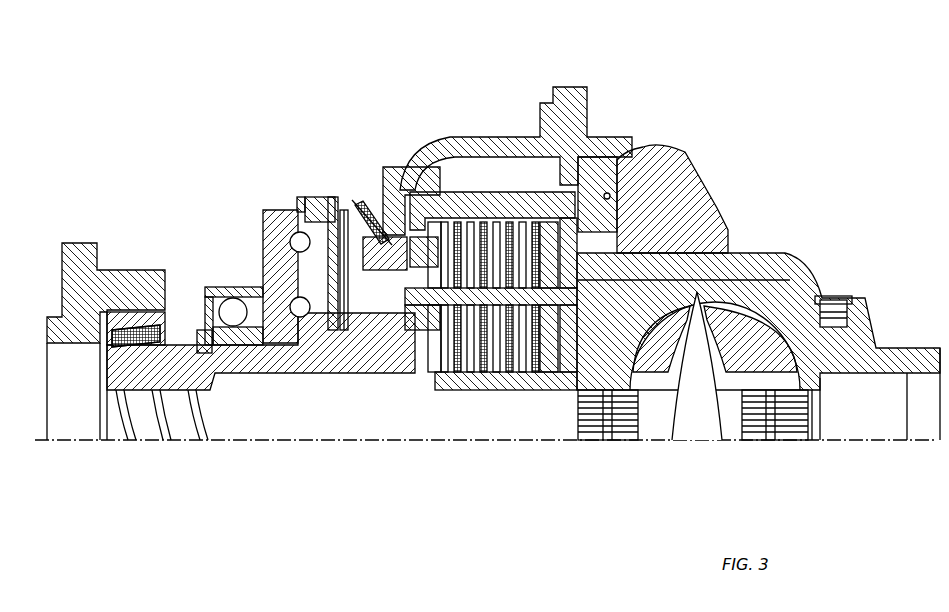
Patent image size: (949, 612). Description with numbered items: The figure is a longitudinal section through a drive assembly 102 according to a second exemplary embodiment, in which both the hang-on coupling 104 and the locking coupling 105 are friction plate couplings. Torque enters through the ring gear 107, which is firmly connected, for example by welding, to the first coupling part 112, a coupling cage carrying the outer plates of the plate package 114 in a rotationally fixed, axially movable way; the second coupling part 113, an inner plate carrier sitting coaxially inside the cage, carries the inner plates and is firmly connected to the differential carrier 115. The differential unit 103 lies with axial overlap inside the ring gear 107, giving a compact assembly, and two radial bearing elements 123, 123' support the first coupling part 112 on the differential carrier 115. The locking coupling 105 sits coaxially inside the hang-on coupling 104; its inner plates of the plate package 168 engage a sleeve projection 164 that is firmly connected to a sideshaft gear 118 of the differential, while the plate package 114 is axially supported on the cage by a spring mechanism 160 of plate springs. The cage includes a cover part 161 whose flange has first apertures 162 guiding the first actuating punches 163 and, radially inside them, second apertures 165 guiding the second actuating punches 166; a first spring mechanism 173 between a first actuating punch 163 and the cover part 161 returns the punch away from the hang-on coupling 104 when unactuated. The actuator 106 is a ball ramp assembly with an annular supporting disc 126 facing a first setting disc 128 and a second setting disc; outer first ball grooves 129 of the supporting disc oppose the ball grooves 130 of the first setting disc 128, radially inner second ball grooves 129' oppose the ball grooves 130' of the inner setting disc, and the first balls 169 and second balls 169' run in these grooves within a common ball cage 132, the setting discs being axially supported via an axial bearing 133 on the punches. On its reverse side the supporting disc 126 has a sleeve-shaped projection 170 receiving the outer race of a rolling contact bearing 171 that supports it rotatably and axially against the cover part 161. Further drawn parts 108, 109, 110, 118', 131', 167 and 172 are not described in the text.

The drive assembly 102 is at (197, 66).
The differential unit 103 is at (711, 243).
The hang-on coupling 104 is at (486, 183).
The locking coupling 105 is at (496, 404).
The actuator 106 is at (296, 126).
The ring gear 107 is at (678, 172).
The housing part 108 is at (622, 200).
The seal 109 is at (140, 350).
The housing cover 110 is at (115, 275).
The first coupling part 112 is at (511, 205).
The second coupling part 113 is at (530, 300).
The plate package 114 is at (452, 212).
The differential carrier 115 is at (752, 295).
The sideshaft gear 118 is at (775, 436).
The bolt 118' is at (608, 436).
The bearing element 123 is at (422, 362).
The bearing element 123' is at (851, 277).
The supporting disc 126 is at (258, 230).
The first setting disc 128 is at (312, 198).
The first ball grooves 129 is at (263, 193).
The second ball grooves 129' is at (281, 402).
The ball grooves 130 is at (273, 241).
The ball grooves 130' is at (310, 403).
The ramp 131' is at (335, 409).
The ball cage 132 is at (300, 210).
The axial bearing 133 is at (334, 205).
The spring mechanism 160 is at (600, 210).
The cover part 161 is at (336, 340).
The first apertures 162 is at (399, 232).
The first actuating punches 163 is at (383, 236).
The sleeve projection 164 is at (526, 394).
The second apertures 165 is at (385, 280).
The second actuating punches 166 is at (400, 334).
The bearing 167 is at (430, 334).
The plate package 168 is at (487, 392).
The first balls 169 is at (277, 173).
The second balls 169' is at (298, 371).
The sleeve-shaped projection 170 is at (222, 285).
The rolling contact bearing 171 is at (208, 308).
The spacer 172 is at (200, 330).
The first spring mechanism 173 is at (362, 236).